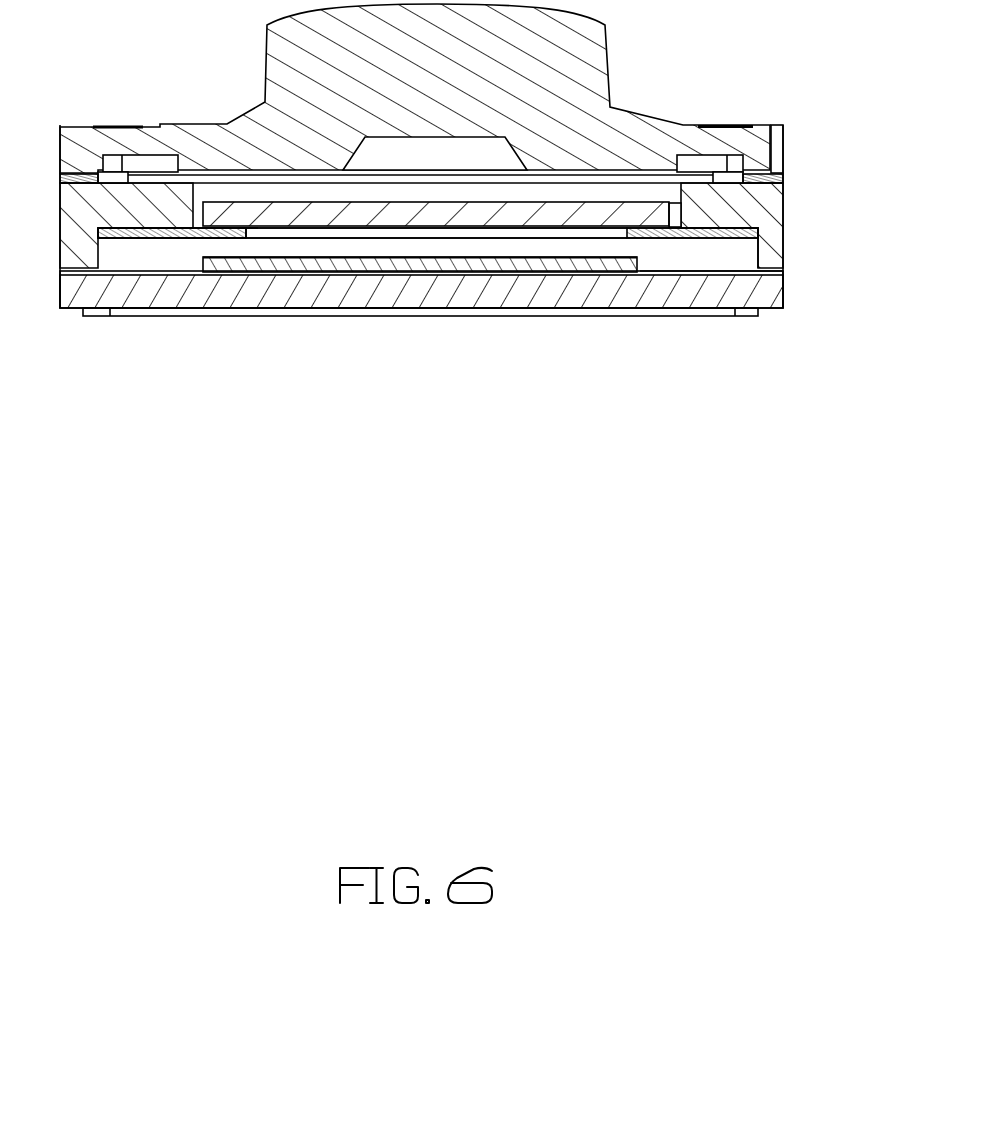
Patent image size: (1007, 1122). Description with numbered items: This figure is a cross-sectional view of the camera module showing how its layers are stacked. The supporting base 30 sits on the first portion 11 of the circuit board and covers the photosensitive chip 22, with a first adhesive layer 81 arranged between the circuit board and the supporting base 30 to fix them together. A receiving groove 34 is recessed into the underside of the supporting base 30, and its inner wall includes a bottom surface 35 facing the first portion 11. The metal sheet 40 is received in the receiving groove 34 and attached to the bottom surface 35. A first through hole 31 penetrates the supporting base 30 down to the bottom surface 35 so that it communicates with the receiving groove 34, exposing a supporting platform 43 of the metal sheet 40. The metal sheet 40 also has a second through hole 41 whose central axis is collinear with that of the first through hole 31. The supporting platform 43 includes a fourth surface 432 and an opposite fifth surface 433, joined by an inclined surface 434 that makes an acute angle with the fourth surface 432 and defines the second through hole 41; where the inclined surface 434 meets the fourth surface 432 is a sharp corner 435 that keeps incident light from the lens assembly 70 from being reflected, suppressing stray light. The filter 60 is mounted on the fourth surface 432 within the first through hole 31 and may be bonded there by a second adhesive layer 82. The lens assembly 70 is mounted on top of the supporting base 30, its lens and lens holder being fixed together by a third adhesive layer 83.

The lens assembly 70 is at (572, 100).
The filter 60 is at (612, 213).
The second adhesive layer 82 is at (673, 205).
The third adhesive layer 83 is at (758, 175).
The supporting base 30 is at (732, 205).
The metal sheet 40 is at (747, 233).
The receiving groove 34 is at (748, 256).
The first adhesive layer 81 is at (760, 262).
The first portion 11 is at (716, 294).
The photosensitive chip 22 is at (512, 266).
The second through hole 41 is at (453, 233).
The sharp corner 435 is at (251, 229).
The inclined surface 434 is at (247, 240).
The supporting platform 43 is at (216, 228).
The fifth surface 433 is at (187, 315).
The bottom surface 35 is at (168, 237).
The fourth surface 432 is at (198, 222).
The first through hole 31 is at (225, 188).